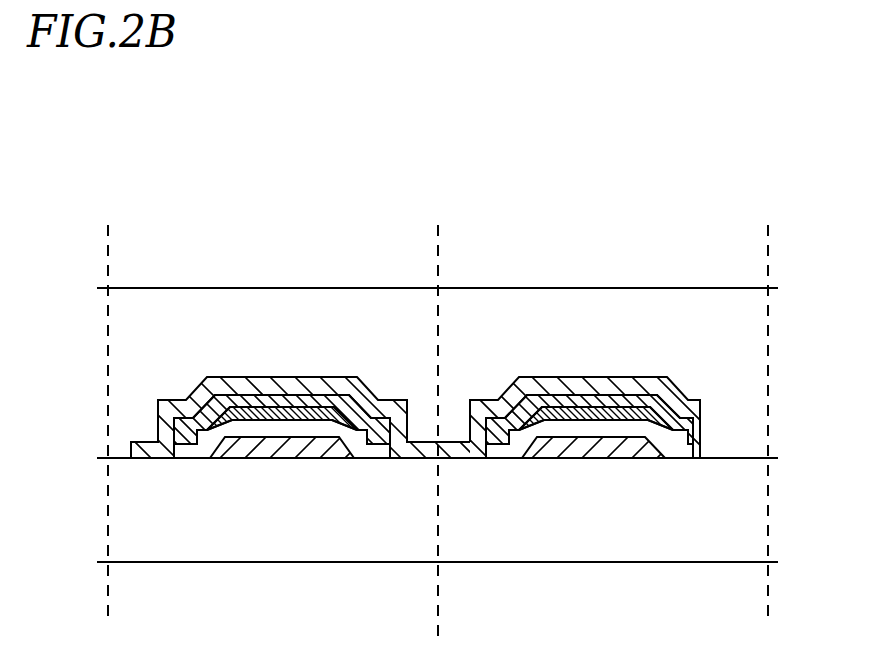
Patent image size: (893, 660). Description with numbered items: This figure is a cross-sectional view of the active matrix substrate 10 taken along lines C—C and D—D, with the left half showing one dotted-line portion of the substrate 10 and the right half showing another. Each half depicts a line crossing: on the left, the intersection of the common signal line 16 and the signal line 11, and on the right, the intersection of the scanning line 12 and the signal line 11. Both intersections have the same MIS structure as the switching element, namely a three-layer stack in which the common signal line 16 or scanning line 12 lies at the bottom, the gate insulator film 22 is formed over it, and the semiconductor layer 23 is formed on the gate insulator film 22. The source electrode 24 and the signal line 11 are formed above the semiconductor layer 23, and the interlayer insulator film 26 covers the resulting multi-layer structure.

The active matrix substrate 10 is at (145, 135).
The signal line 11 is at (590, 378).
The scanning line 12 is at (607, 455).
The common signal line 16 is at (258, 450).
The gate insulator film 22 is at (372, 462).
The semiconductor layer 23 is at (272, 415).
The source electrode 24 is at (231, 395).
The interlayer insulator film 26 is at (160, 305).